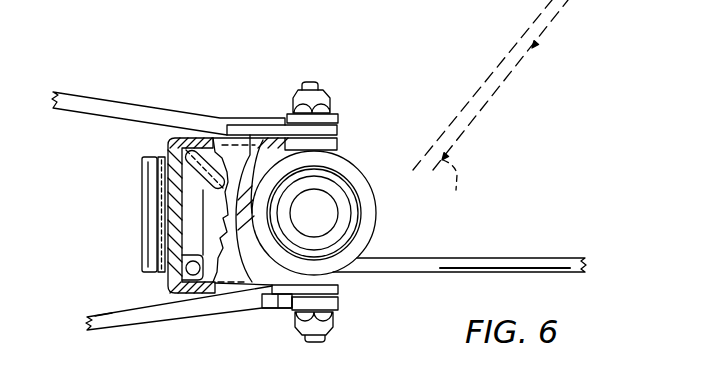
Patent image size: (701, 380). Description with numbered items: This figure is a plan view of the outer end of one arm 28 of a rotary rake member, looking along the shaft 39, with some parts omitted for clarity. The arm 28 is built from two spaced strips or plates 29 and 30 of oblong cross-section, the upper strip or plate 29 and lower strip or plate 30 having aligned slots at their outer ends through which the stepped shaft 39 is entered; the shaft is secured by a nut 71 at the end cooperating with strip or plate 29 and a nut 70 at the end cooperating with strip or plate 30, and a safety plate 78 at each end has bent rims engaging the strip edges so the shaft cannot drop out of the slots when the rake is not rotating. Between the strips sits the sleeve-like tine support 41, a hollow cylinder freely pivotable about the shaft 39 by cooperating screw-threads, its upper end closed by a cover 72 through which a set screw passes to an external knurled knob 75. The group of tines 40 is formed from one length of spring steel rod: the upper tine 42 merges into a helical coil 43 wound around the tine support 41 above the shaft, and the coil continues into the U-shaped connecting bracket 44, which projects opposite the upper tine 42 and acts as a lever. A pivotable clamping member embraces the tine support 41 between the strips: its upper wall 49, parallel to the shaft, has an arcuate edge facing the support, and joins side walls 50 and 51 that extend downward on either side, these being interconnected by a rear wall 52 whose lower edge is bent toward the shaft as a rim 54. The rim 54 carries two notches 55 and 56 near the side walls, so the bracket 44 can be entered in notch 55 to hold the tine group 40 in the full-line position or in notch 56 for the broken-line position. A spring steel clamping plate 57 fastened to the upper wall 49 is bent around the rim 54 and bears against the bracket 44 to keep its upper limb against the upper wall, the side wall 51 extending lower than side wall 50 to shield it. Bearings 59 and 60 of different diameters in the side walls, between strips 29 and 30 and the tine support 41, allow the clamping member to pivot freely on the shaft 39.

The arm 28 is at (103, 307).
The strip or plate 29 is at (107, 101).
The strip or plate 30 is at (112, 328).
The shaft 39 is at (318, 80).
The group of tines 40 is at (441, 256).
The tine support 41 is at (359, 208).
The upper tine 42 is at (546, 258).
The helical coil 43 is at (369, 238).
The connecting bracket 44 is at (173, 178).
The upper wall 49 is at (238, 158).
The side wall 50 is at (270, 145).
The side wall 51 is at (276, 304).
The rear wall 52 is at (173, 202).
The rim 54 is at (187, 219).
The notch 55 is at (180, 148).
The notch 56 is at (177, 285).
The spring steel clamping plate 57 is at (143, 253).
The bearing 59 is at (339, 131).
The bearing 60 is at (339, 292).
The nut 70 is at (328, 330).
The nut 71 is at (325, 98).
The cover 72 is at (327, 180).
The knurled knob 75 is at (326, 197).
The safety plate 78 is at (339, 118).